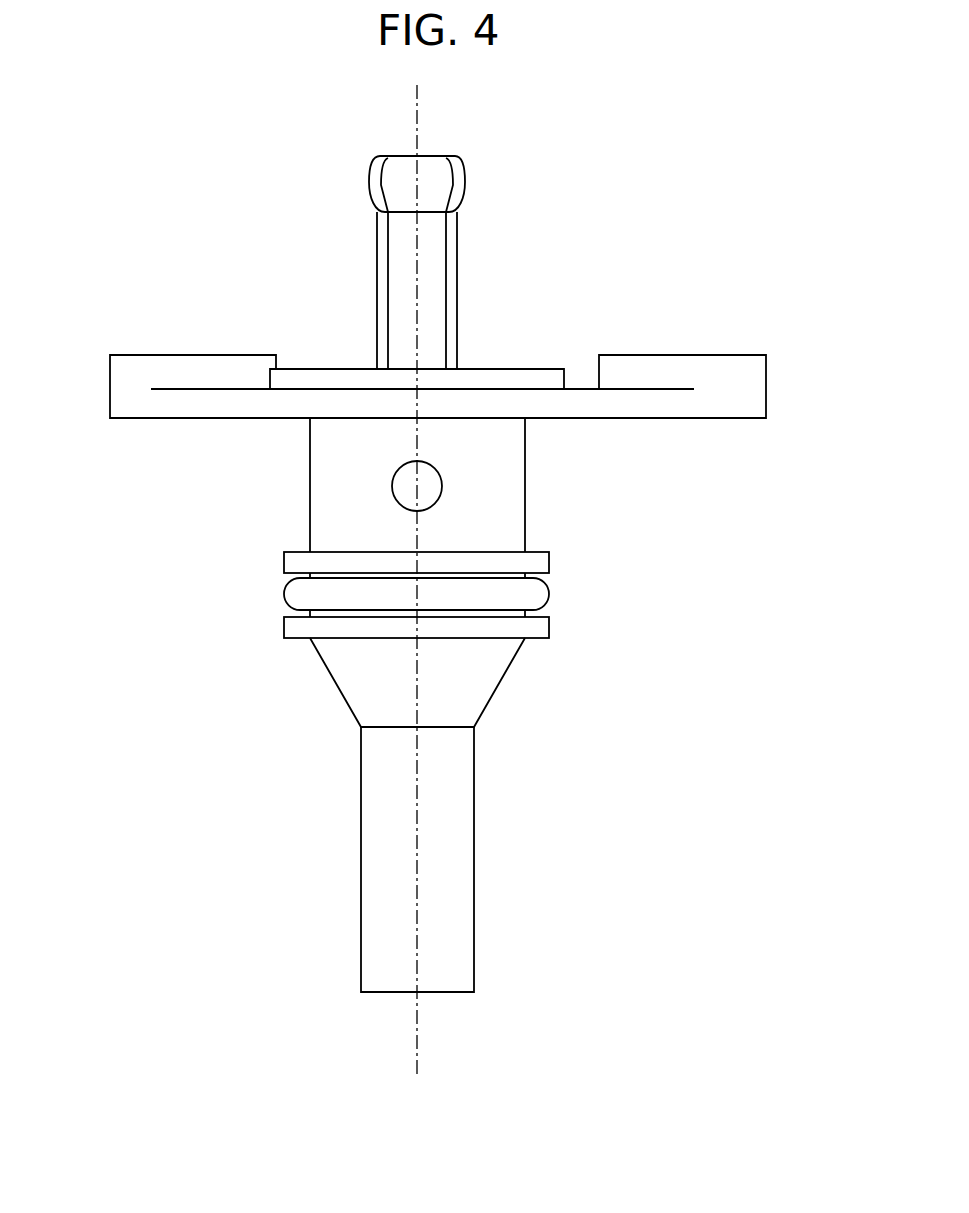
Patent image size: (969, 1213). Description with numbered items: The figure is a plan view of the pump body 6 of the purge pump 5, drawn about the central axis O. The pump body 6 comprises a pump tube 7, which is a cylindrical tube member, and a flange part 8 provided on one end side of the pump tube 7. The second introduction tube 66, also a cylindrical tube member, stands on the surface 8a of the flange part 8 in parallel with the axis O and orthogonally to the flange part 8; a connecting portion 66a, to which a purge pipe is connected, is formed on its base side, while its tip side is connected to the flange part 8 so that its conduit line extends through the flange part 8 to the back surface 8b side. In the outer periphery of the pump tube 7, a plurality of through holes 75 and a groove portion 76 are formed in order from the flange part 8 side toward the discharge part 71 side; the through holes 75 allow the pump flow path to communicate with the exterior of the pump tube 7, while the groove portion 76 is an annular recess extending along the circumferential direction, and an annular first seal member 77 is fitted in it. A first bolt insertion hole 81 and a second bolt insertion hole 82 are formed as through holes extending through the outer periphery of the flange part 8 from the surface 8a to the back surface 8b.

The purge pump 5 is at (796, 104).
The pump body 6 is at (683, 185).
The second introduction tube 66 is at (385, 265).
The connecting portion 66a is at (373, 196).
The pump tube 7 is at (452, 800).
The discharge part 71 is at (391, 992).
The through holes 75 is at (310, 487).
The groove portion 76 is at (510, 576).
The first seal member 77 is at (284, 592).
The flange part 8 is at (605, 300).
The surface 8a is at (318, 367).
The back surface 8b is at (313, 420).
The first bolt insertion hole 81 is at (681, 355).
The second bolt insertion hole 82 is at (212, 355).
The axis O is at (417, 102).